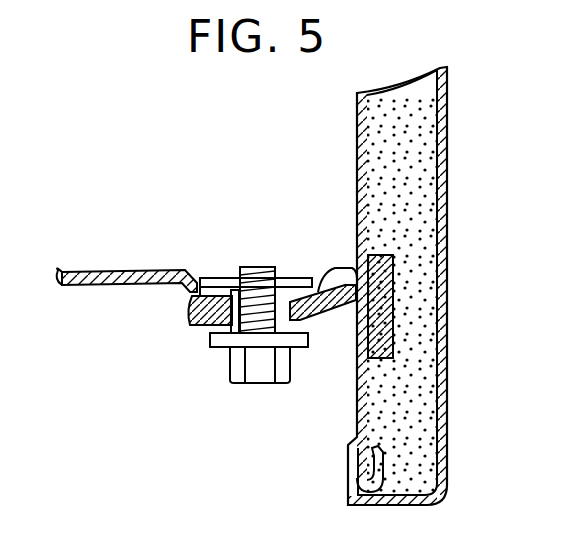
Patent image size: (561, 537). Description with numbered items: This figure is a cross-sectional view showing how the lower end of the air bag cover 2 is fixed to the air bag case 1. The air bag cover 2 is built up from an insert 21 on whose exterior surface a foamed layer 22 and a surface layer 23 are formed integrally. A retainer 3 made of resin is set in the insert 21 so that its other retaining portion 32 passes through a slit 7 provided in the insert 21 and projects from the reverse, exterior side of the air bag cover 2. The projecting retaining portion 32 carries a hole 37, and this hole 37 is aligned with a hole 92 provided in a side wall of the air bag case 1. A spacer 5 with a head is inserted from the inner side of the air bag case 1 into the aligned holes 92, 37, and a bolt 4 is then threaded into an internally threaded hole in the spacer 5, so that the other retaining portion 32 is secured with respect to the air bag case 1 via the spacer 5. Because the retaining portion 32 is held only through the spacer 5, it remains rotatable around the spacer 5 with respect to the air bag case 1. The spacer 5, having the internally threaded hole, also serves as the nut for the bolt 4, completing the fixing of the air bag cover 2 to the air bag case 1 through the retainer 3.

The air bag case 1 is at (113, 270).
The air bag cover 2 is at (408, 286).
The retainer 3 is at (176, 304).
The bolt 4 is at (246, 385).
The spacer 5 is at (215, 277).
The slit 7 is at (352, 325).
The insert 21 is at (357, 405).
The foamed layer 22 is at (420, 390).
The surface layer 23 is at (447, 300).
The other retaining portion 32 is at (188, 326).
The hole 37 is at (298, 350).
The hole 92 is at (207, 332).